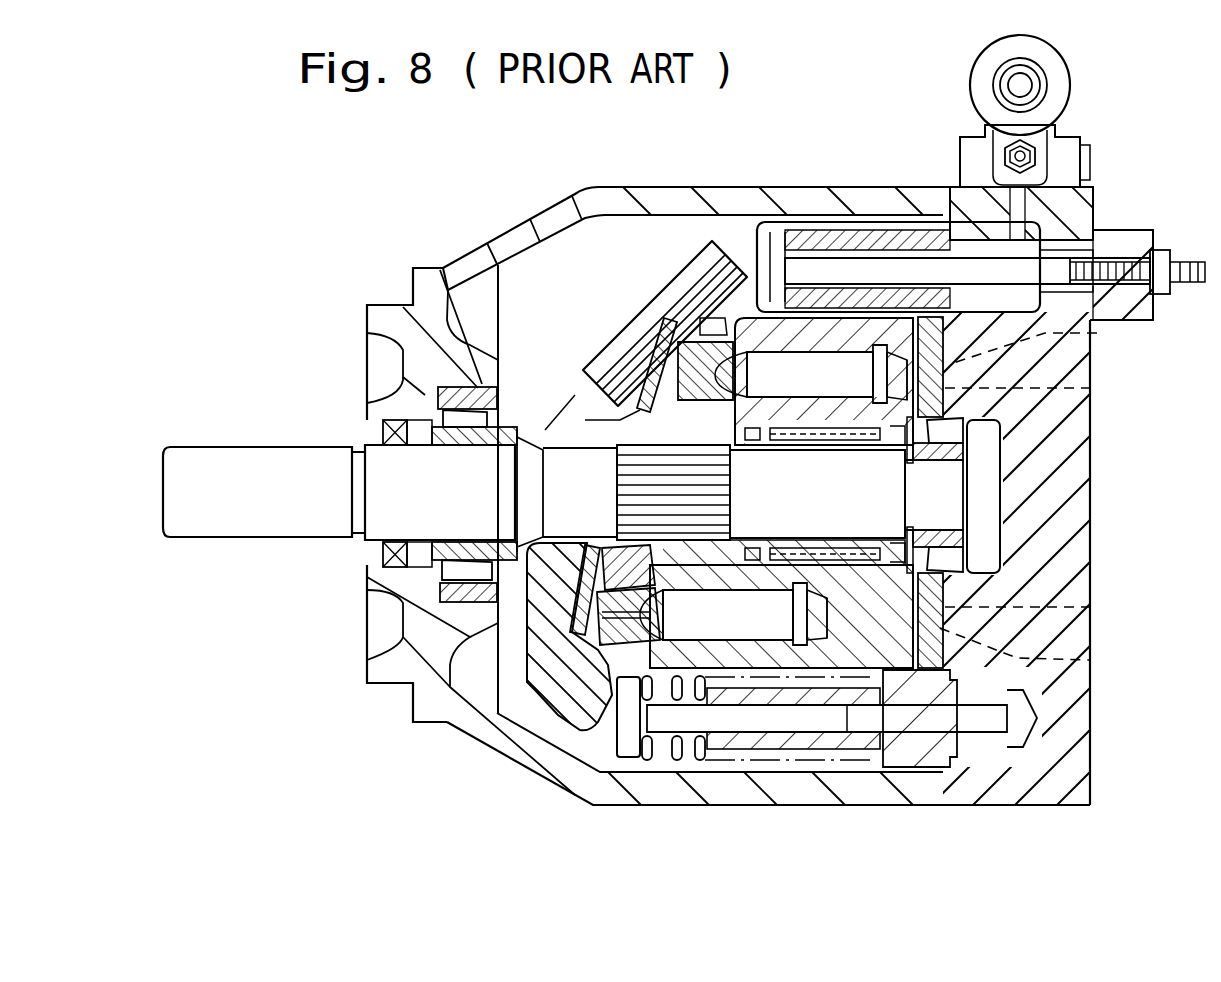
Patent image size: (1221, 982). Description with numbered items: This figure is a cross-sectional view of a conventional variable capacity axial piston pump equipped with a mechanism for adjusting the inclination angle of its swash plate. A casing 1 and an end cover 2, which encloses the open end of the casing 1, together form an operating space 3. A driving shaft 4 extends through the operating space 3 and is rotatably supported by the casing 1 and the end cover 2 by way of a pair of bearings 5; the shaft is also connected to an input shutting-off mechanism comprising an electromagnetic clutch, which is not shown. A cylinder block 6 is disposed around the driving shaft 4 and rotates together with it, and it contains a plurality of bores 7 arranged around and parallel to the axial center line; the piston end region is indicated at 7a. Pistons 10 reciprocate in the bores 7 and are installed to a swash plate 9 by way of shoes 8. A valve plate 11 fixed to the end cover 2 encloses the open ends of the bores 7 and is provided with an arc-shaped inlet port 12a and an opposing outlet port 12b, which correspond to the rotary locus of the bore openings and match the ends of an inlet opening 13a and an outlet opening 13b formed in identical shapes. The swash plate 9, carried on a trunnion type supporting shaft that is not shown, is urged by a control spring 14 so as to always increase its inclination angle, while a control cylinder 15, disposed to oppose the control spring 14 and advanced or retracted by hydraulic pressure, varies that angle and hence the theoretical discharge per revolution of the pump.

The casing 1 is at (732, 195).
The end cover 2 is at (1085, 495).
The operating space 3 is at (570, 248).
The driving shaft 4 is at (268, 465).
The bearings 5 is at (455, 425).
The cylinder block 6 is at (735, 655).
The bores 7 is at (828, 400).
The piston end 7a is at (905, 368).
The shoes 8 is at (680, 315).
The swash plate 9 is at (615, 345).
The pistons 10 is at (772, 430).
The valve plate 11 is at (975, 590).
The inlet port 12a is at (965, 625).
The outlet port 12b is at (960, 372).
The inlet opening 13a is at (1090, 655).
The outlet opening 13b is at (1097, 333).
The control spring 14 is at (695, 757).
The control cylinder 15 is at (770, 225).